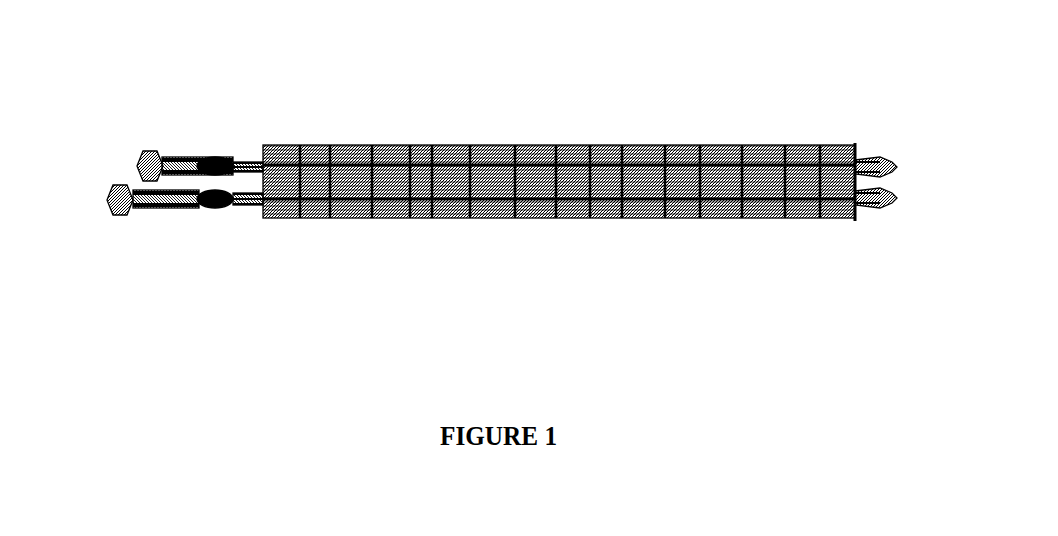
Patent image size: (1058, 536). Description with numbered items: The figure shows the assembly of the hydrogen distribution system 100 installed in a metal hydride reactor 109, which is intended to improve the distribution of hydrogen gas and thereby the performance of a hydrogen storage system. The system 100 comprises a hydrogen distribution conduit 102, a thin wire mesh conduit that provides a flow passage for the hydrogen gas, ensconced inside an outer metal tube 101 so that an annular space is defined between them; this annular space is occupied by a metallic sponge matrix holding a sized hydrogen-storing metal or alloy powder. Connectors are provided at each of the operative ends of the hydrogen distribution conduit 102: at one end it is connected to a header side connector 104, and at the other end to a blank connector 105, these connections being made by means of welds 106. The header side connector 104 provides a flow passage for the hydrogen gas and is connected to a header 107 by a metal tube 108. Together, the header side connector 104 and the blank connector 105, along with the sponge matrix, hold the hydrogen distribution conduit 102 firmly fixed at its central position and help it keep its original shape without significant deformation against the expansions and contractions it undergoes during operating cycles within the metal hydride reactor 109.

The hydrogen distribution system 100 is at (247, 156).
The outer metal tube 101 is at (233, 160).
The hydrogen distribution conduit 102 is at (255, 208).
The header side connector 104 is at (213, 160).
The blank connector 105 is at (887, 157).
The welds 106 is at (232, 212).
The header 107 is at (133, 153).
The metal tube 108 is at (172, 210).
The metal hydride reactor 109 is at (520, 217).